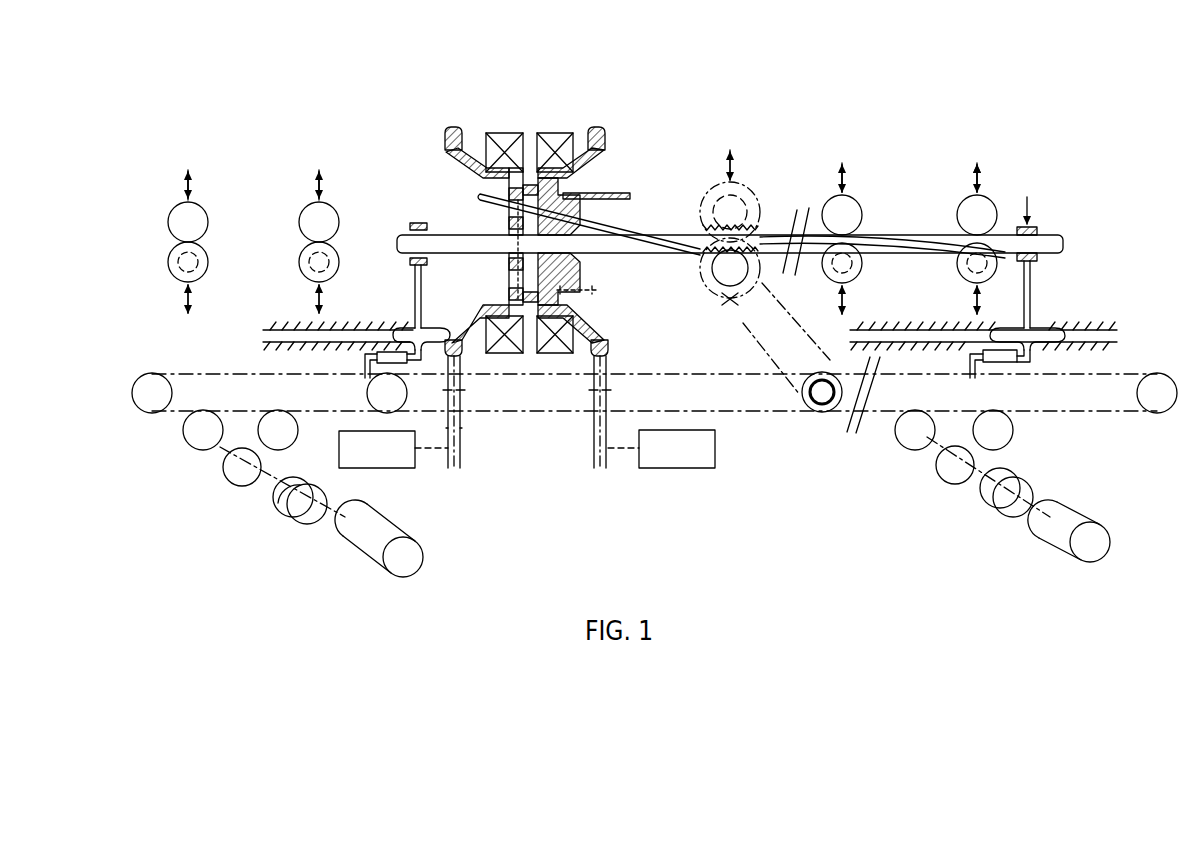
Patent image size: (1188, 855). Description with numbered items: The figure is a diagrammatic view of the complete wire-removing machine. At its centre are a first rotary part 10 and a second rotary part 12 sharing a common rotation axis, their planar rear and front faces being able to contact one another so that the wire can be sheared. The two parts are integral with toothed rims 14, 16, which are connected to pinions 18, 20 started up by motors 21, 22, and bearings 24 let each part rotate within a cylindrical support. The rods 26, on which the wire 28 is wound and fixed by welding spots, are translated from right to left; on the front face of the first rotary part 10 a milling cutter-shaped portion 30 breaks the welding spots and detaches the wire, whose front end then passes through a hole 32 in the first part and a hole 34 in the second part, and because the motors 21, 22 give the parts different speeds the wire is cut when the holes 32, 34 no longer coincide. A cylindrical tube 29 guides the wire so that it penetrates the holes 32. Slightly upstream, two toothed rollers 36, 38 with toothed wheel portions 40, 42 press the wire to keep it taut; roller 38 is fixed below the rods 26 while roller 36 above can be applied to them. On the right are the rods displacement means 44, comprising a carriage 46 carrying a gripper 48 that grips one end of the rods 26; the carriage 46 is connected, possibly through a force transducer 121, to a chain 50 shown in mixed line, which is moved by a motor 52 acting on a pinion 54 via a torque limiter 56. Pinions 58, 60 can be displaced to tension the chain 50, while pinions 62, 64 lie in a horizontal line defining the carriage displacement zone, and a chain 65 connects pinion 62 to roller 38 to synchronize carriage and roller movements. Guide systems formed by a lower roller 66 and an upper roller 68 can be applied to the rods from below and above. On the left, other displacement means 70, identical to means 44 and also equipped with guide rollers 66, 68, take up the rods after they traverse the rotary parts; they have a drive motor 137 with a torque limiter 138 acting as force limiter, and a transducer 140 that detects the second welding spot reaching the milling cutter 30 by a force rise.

The first rotary part 10 is at (509, 208).
The second rotary part 12 is at (440, 135).
The toothed rim 14 is at (597, 127).
The toothed rim 16 is at (450, 127).
The pinion 18 is at (593, 427).
The pinion 20 is at (462, 368).
The motor 21 is at (665, 457).
The motor 22 is at (393, 460).
The bearings 24 is at (548, 148).
The rods 26 is at (640, 250).
The wire 28 is at (640, 223).
The cylindrical tube 29 is at (632, 196).
The milling cutter-shaped portion 30 is at (594, 288).
The hole 32 is at (567, 197).
The hole 34 is at (518, 282).
The toothed roller 36 is at (742, 205).
The toothed roller 38 is at (728, 298).
The toothed wheel 40 is at (763, 212).
The toothed wheel 42 is at (750, 327).
The rods displacement means 44 is at (1040, 313).
The carriage 46 is at (1030, 366).
The gripper 48 is at (1040, 232).
The chain 50 is at (1140, 385).
The motor 52 is at (1100, 540).
The pinion 54 is at (940, 480).
The torque limiter 56 is at (988, 500).
The pinion 58 is at (898, 420).
The pinion 60 is at (1003, 427).
The pinion 62 is at (817, 407).
The pinion 64 is at (1157, 397).
The chain 65 is at (783, 375).
The lower roller 66 is at (300, 260).
The upper roller 68 is at (310, 228).
The displacement means 70 is at (300, 531).
The force transducer 121 is at (1000, 370).
The drive motor 137 is at (400, 572).
The torque limiter 138 is at (312, 523).
The transducer 140 is at (387, 350).